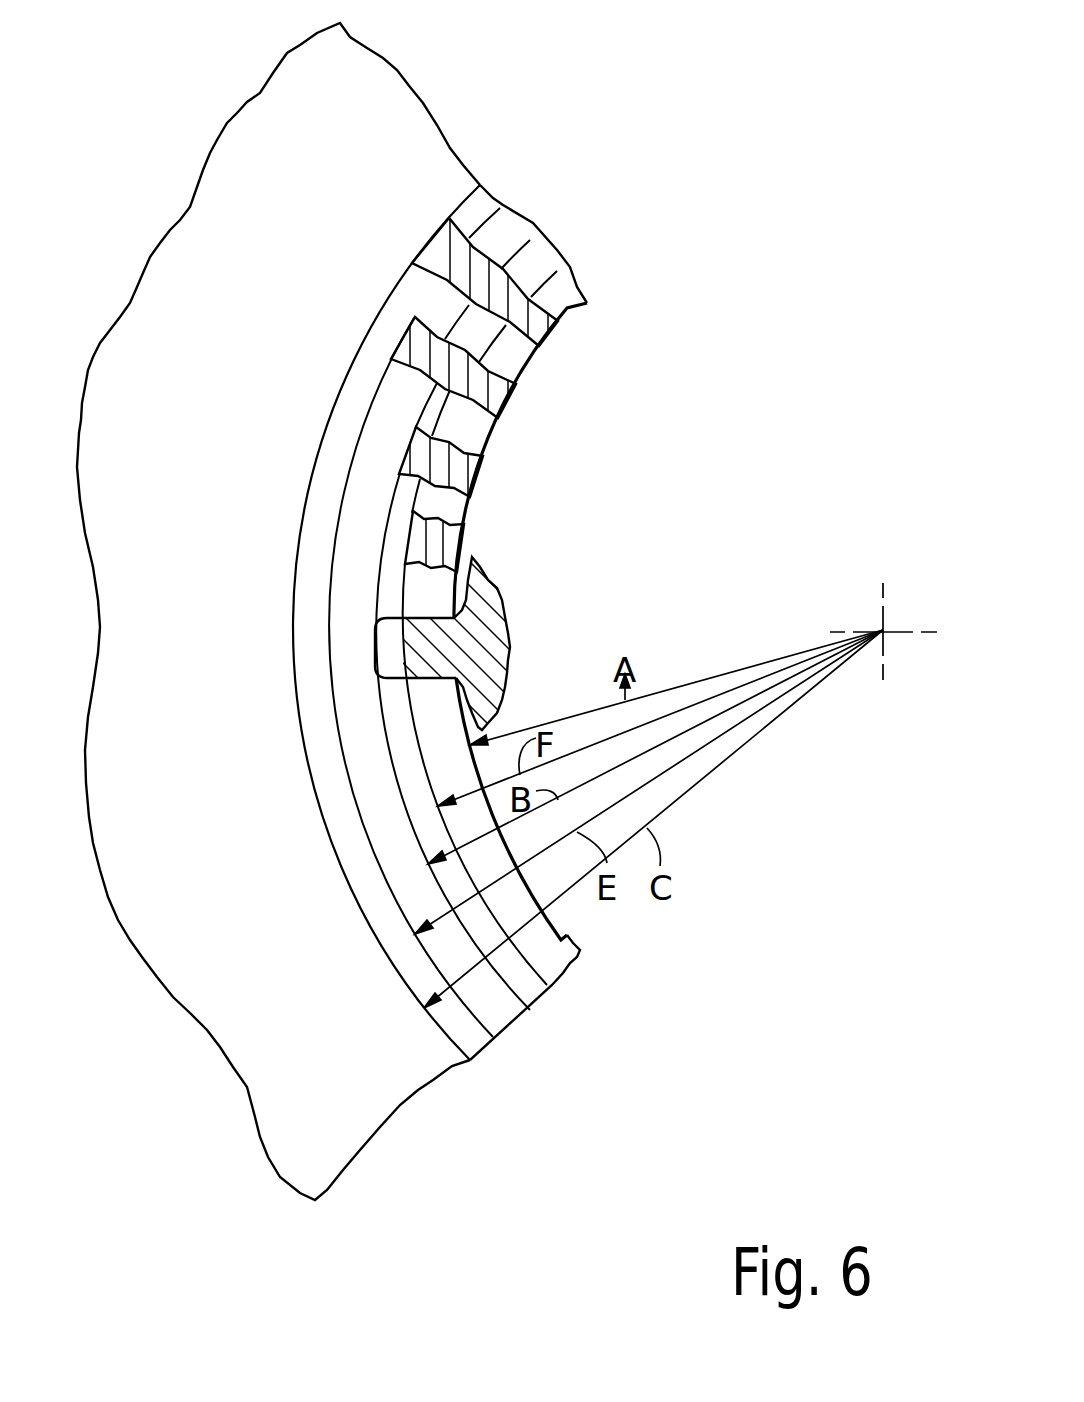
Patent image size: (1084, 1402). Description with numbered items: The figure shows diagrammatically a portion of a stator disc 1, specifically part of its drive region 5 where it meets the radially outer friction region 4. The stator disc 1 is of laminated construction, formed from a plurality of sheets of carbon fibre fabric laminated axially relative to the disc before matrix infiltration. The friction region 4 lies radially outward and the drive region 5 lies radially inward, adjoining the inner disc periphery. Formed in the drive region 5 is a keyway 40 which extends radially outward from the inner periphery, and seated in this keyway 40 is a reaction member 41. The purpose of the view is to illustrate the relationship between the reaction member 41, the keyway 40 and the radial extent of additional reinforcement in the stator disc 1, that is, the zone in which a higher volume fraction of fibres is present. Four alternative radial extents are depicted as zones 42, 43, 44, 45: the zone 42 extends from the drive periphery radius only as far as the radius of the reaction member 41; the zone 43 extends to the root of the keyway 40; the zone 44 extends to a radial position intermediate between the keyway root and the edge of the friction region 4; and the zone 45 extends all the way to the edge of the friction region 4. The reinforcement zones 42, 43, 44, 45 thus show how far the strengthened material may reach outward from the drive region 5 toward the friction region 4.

The stator disc 1 is at (430, 1098).
The friction region 4 is at (252, 358).
The drive region 5 is at (370, 741).
The keyway 40 is at (392, 663).
The reaction member 41 is at (492, 650).
The zone of higher fibre volume fraction 42 is at (440, 550).
The zone of higher fibre volume fraction 43 is at (460, 478).
The zone of higher fibre volume fraction 44 is at (490, 385).
The zone of higher fibre volume fraction 45 is at (538, 322).